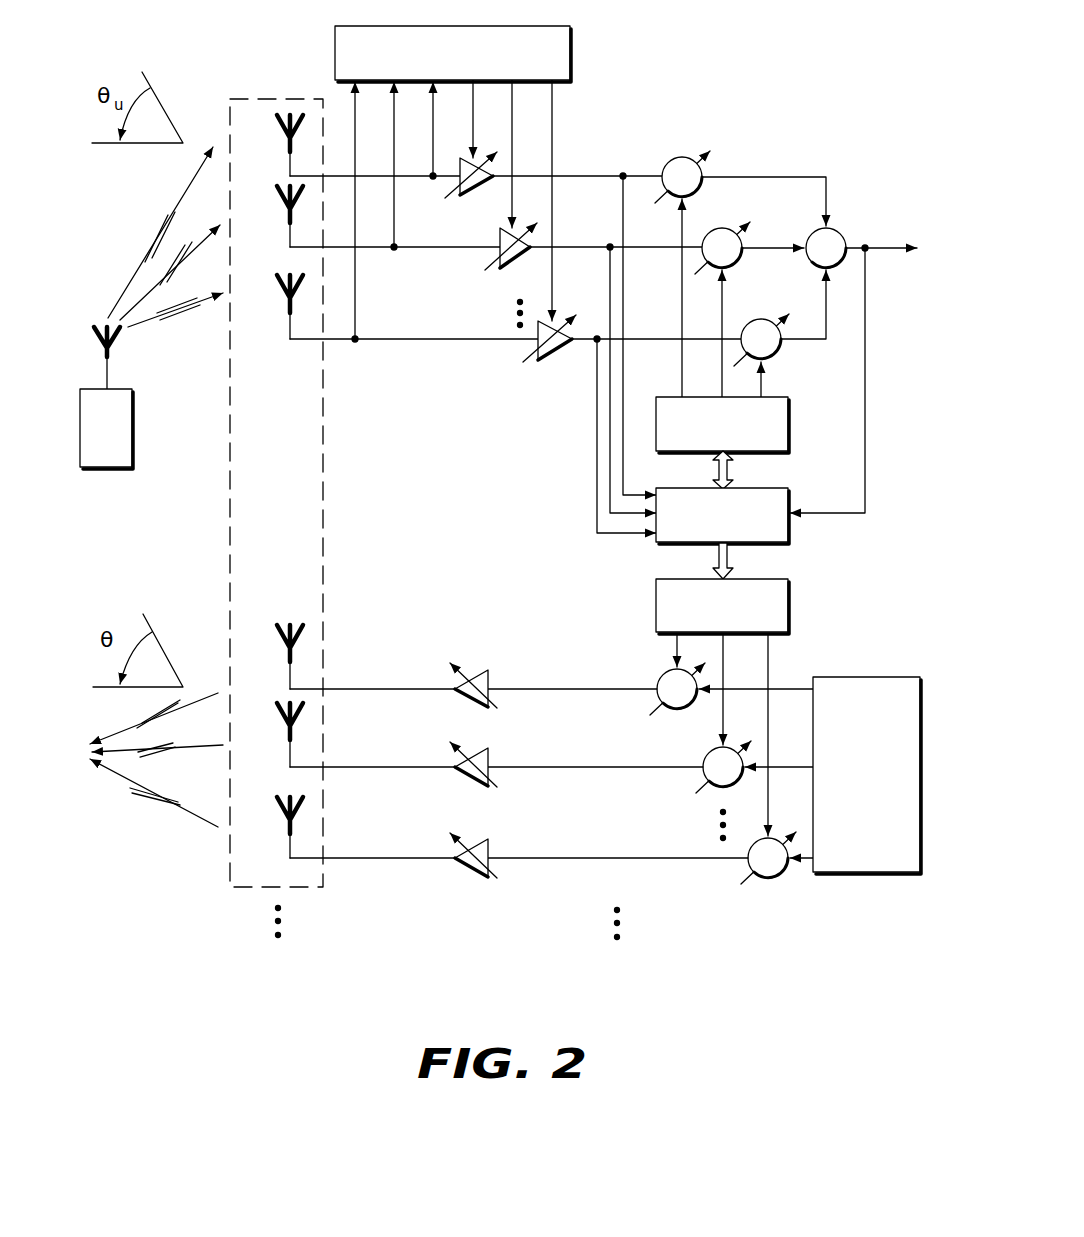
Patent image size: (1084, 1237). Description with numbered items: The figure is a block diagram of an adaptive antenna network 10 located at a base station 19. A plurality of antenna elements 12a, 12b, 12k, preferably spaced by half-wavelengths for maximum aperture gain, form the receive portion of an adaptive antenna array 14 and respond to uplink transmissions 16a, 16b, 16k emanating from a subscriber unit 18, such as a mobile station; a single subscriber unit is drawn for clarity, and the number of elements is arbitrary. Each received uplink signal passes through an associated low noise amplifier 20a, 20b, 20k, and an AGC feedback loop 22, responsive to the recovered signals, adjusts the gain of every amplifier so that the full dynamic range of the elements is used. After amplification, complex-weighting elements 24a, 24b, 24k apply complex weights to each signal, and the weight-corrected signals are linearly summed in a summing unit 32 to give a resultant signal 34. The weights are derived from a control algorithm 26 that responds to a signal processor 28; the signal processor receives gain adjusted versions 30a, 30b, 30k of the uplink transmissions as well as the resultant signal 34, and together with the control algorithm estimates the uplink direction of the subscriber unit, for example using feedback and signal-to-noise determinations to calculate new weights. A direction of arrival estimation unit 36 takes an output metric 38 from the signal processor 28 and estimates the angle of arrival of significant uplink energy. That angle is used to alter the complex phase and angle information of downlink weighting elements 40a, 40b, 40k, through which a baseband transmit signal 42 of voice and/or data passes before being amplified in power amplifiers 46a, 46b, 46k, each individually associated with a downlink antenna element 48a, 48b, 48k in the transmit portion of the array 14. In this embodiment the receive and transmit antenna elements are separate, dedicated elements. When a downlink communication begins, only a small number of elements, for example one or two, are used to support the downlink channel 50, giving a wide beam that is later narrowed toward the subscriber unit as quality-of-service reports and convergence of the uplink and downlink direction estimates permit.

The adaptive antenna network 10 is at (483, 1013).
The antenna element 12a is at (278, 135).
The antenna element 12b is at (278, 205).
The antenna element 12k is at (278, 294).
The adaptive antenna array 14 is at (323, 553).
The uplink transmission 16a is at (158, 212).
The uplink transmission 16b is at (213, 234).
The uplink transmission 16k is at (172, 316).
The subscriber unit 18 is at (132, 428).
The base station 19 is at (290, 920).
The low noise amplifier 20a is at (466, 196).
The low noise amplifier 20b is at (503, 268).
The low noise amplifier 20k is at (541, 360).
The AGC feedback loop 22 is at (507, 27).
The complex-weighting element 24a is at (700, 190).
The complex-weighting element 24b is at (740, 261).
The complex-weighting element 24k is at (779, 352).
The control algorithm 26 is at (790, 425).
The signal processor 28 is at (760, 488).
The gain adjusted version of uplink transmission 30a is at (623, 214).
The gain adjusted version of uplink transmission 30b is at (610, 293).
The gain adjusted version of uplink transmission 30k is at (597, 412).
The summing unit 32 is at (838, 235).
The resultant signal 34 is at (884, 250).
The direction of arrival estimation unit 36 is at (790, 612).
The output metric 38 is at (730, 556).
The downlink weighting element 40a is at (682, 709).
The downlink weighting element 40b is at (722, 787).
The downlink weighting element 40k is at (779, 876).
The baseband transmit signal 42 is at (856, 677).
The power amplifier 46a is at (458, 696).
The power amplifier 46b is at (458, 775).
The power amplifier 46k is at (458, 866).
The downlink antenna element 48a is at (278, 645).
The downlink antenna element 48b is at (278, 723).
The downlink antenna element 48k is at (278, 817).
The downlink channel 50 is at (135, 722).